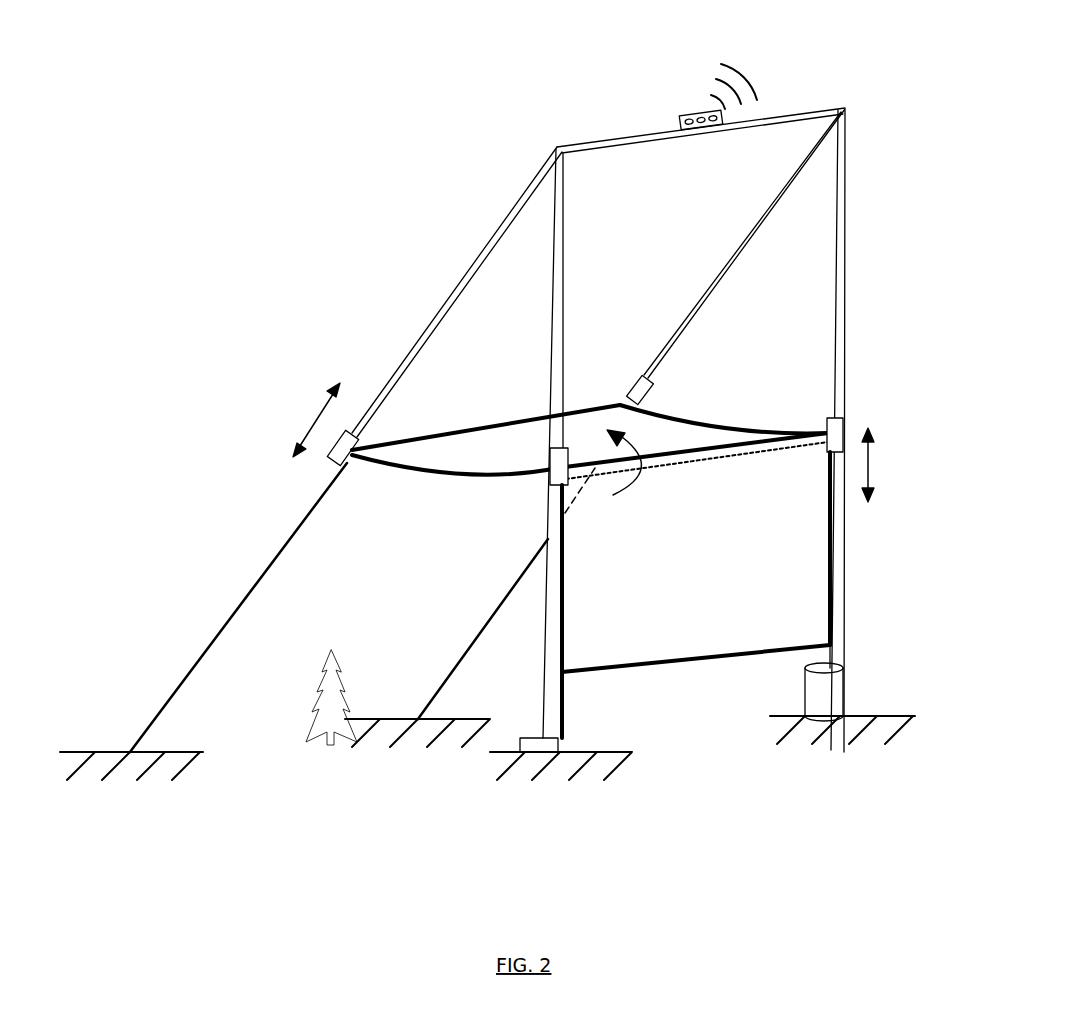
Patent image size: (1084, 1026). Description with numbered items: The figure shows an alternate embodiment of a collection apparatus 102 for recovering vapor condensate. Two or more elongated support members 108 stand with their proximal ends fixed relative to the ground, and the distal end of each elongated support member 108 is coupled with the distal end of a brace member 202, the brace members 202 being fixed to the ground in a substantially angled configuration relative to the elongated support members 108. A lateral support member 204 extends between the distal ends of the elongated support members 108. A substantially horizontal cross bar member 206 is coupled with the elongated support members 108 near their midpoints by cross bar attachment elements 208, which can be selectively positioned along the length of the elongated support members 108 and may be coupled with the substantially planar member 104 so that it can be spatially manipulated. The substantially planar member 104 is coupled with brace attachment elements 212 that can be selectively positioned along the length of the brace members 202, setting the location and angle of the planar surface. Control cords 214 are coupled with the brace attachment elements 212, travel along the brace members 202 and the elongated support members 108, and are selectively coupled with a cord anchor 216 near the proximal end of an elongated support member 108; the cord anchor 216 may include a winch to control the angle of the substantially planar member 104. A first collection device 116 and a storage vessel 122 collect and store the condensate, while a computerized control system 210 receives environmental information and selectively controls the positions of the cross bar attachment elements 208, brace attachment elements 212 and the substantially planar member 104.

The collection apparatus 102 is at (400, 93).
The substantially planar member 104 is at (787, 563).
The elongated support members 108 is at (563, 693).
The first collection device 116 is at (697, 408).
The storage vessel 122 is at (814, 687).
The brace members 202 is at (218, 608).
The lateral support member 204 is at (628, 142).
The cross bar member 206 is at (735, 455).
The cross bar attachment elements 208 is at (548, 485).
The computerized control system 210 is at (695, 112).
The brace attachment elements 212 is at (633, 378).
The control cords 214 is at (398, 355).
The cord anchor 216 is at (528, 750).